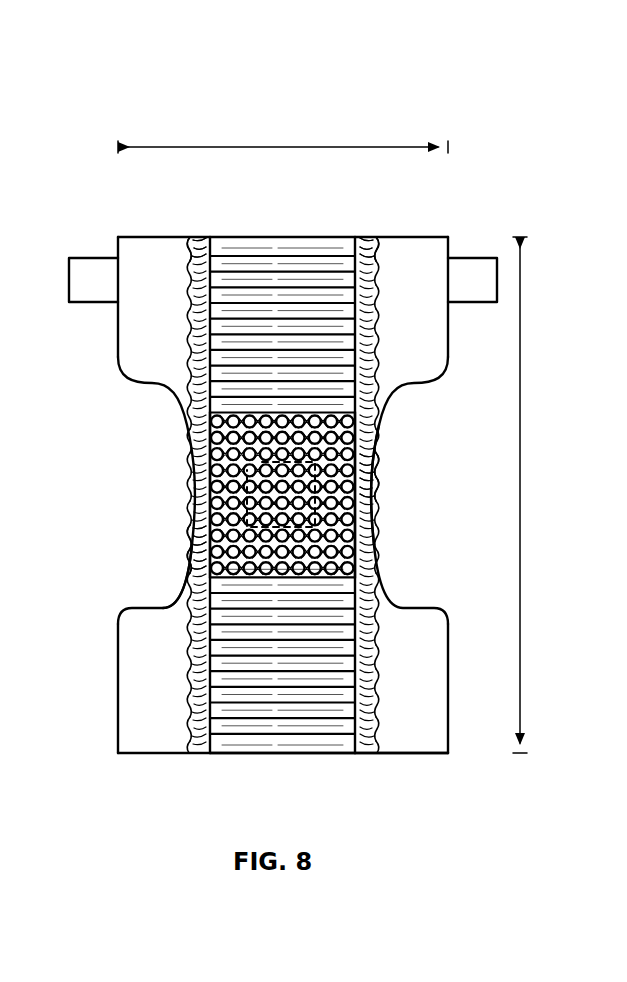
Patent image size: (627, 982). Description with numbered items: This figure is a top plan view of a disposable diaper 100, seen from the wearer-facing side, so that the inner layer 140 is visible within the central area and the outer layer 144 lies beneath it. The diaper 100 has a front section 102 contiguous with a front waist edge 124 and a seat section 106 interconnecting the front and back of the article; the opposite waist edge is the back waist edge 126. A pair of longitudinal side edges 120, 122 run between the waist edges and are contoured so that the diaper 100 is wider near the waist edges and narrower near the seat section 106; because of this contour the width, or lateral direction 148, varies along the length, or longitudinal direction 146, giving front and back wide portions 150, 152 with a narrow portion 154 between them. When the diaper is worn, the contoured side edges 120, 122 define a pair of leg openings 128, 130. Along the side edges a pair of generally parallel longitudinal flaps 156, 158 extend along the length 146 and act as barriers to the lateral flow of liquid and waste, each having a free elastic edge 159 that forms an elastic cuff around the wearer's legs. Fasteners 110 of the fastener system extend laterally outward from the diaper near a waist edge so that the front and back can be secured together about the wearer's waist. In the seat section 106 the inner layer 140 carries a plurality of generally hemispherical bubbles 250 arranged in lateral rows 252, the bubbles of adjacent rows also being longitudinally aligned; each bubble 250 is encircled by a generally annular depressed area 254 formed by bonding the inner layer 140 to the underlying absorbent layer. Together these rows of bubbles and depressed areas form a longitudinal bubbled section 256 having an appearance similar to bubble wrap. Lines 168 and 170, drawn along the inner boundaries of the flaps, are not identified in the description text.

The disposable diaper 100 is at (126, 92).
The front section 102 is at (117, 683).
The seat section 106 is at (372, 440).
The fasteners 110 is at (68, 282).
The longitudinal side edge 120 is at (383, 410).
The longitudinal side edge 122 is at (183, 408).
The front waist edge 124 is at (337, 753).
The back waist edge 126 is at (332, 237).
The leg opening 128 is at (183, 587).
The leg opening 130 is at (366, 500).
The inner layer 140 is at (300, 750).
The outer layer 144 is at (418, 753).
The longitudinal direction 146 is at (521, 282).
The lateral direction 148 is at (237, 145).
The front wide portion 150 is at (460, 340).
The back wide portion 152 is at (460, 638).
The narrow portion 154 is at (382, 476).
The longitudinal flap 156 is at (194, 238).
The longitudinal flap 158 is at (372, 237).
The free elastic edge 159 is at (188, 258).
The first channel line 168 is at (217, 237).
The second channel line 170 is at (353, 237).
The bubbles 250 is at (352, 568).
The lateral rows 252 is at (200, 543).
The annular depressed area 254 is at (366, 527).
The longitudinal bubbled section 256 is at (196, 468).